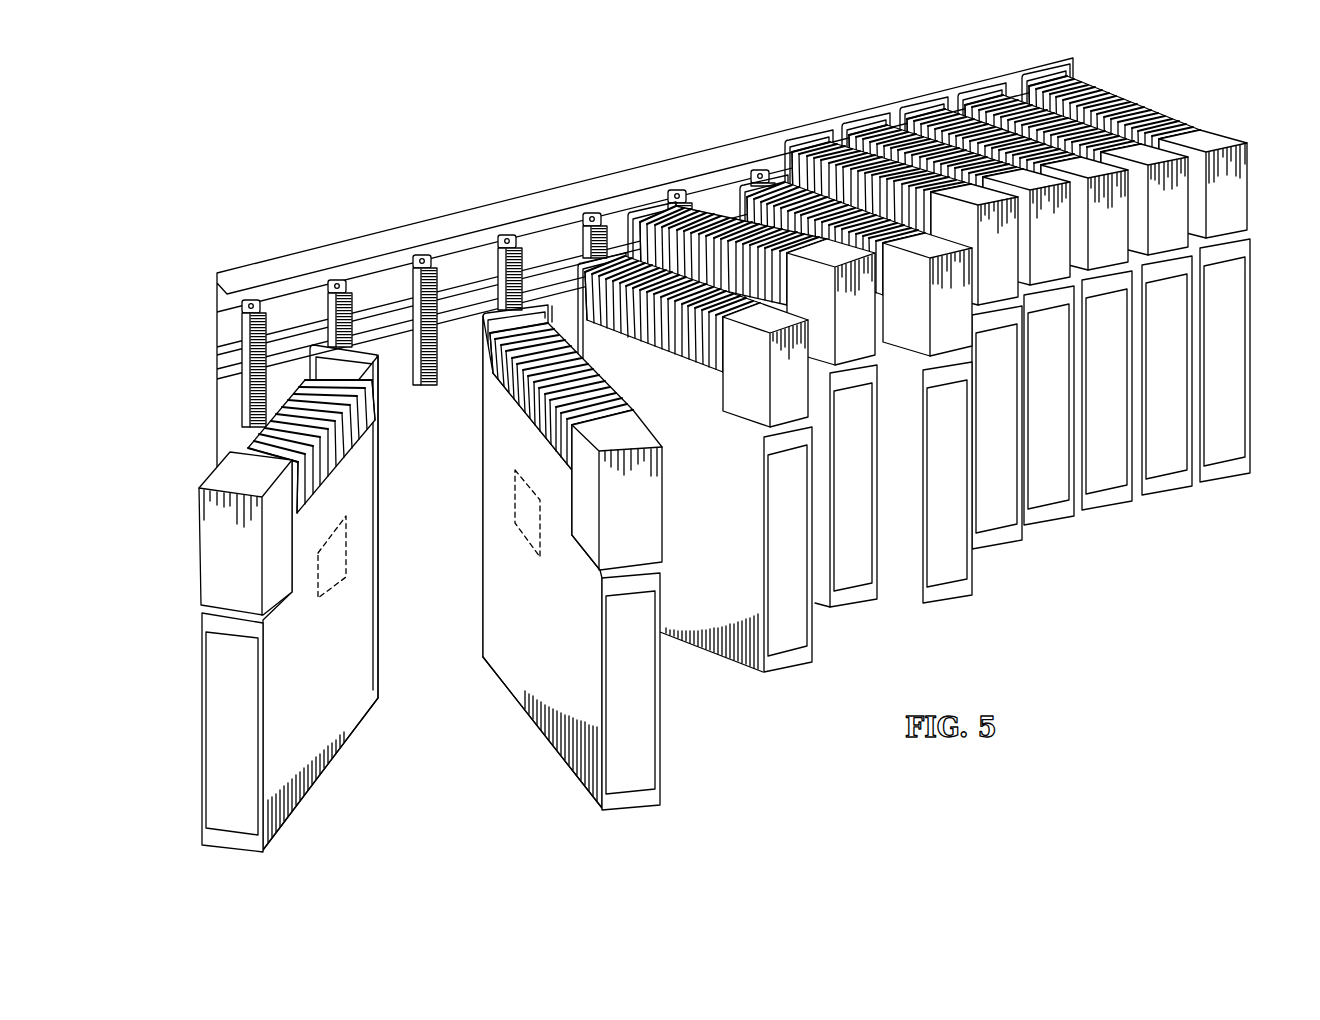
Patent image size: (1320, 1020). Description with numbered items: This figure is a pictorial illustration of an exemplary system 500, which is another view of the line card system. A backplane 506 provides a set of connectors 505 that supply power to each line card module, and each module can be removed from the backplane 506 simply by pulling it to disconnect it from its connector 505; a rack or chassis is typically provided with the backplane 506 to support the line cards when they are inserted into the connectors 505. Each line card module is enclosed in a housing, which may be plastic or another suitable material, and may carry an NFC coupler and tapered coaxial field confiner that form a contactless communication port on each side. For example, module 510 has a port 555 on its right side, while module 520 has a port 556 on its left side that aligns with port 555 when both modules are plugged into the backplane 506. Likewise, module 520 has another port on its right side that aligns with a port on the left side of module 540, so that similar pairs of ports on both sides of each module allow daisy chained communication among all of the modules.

The system 500 is at (494, 106).
The connectors 505 is at (507, 234).
The backplane 506 is at (620, 170).
The module 510 is at (205, 543).
The module 520 is at (650, 748).
The module 540 is at (800, 636).
The port 555 is at (339, 583).
The port 556 is at (523, 541).